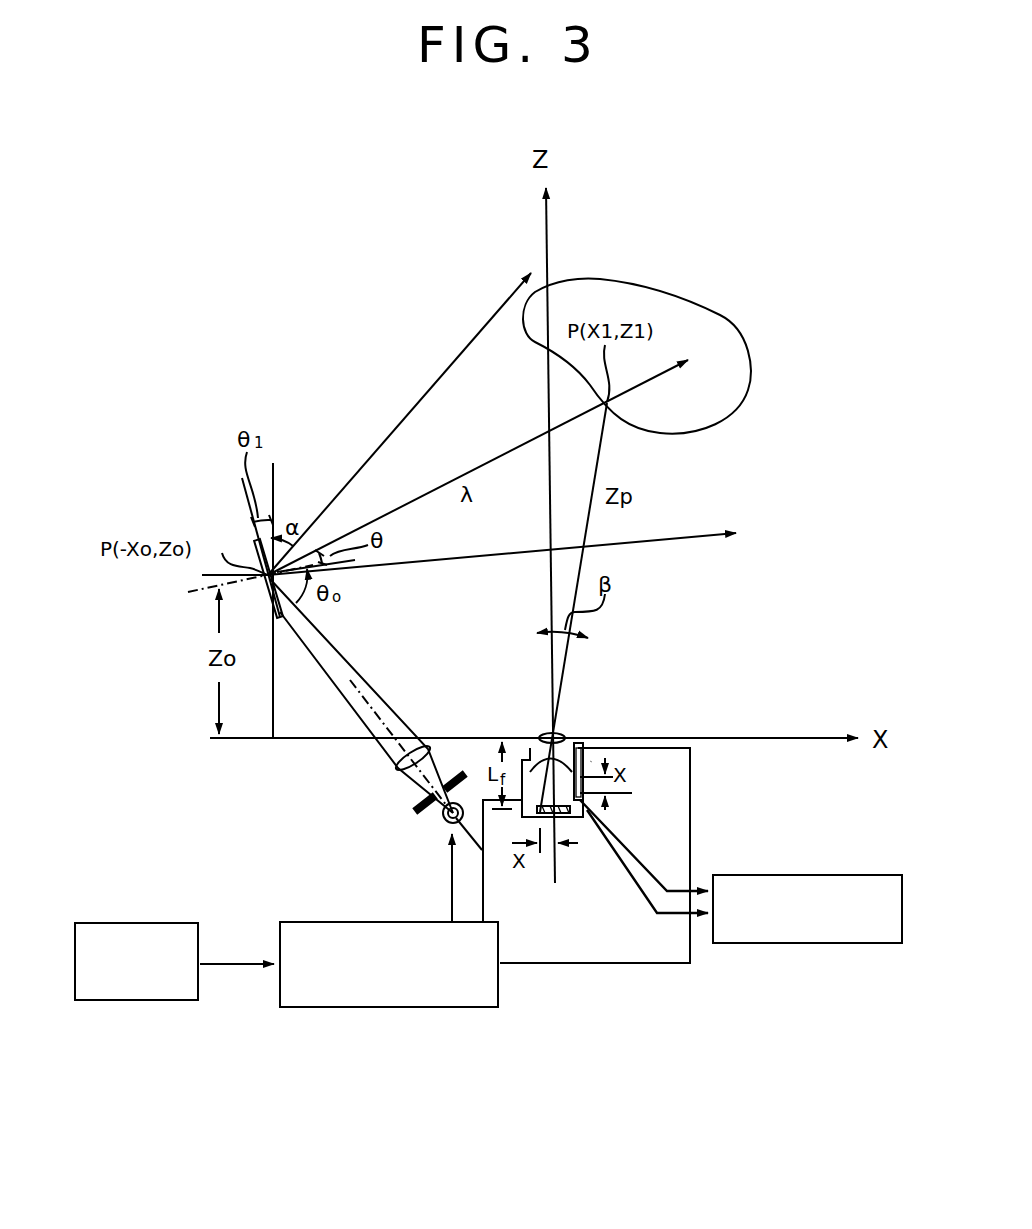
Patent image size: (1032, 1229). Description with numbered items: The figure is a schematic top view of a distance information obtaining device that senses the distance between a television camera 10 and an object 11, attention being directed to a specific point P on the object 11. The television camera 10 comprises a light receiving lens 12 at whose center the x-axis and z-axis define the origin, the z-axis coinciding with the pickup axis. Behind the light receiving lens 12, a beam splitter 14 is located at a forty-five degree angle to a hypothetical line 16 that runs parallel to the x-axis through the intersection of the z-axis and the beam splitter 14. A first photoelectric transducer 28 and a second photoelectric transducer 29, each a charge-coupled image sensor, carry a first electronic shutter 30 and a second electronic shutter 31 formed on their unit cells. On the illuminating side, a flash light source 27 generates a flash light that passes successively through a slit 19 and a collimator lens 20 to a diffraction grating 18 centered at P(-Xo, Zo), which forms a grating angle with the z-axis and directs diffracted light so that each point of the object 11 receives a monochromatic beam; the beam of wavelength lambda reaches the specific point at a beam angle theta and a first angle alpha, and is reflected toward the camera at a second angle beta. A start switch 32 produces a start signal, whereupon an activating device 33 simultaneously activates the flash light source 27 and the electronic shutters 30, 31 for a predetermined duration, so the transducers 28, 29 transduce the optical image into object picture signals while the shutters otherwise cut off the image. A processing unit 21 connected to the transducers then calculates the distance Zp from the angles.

The television camera 10 is at (592, 762).
The object 11 is at (680, 297).
The light receiving lens 12 is at (548, 733).
The beam splitter 14 is at (522, 817).
The hypothetical line 16 is at (632, 793).
The diffraction grating 18 is at (258, 542).
The slit 19 is at (418, 815).
The collimator lens 20 is at (398, 767).
The processing unit 21 is at (820, 875).
The flash light source 27 is at (450, 828).
The first photoelectric transducer 28 is at (562, 814).
The second photoelectric transducer 29 is at (585, 800).
The first electronic shutter 30 is at (548, 763).
The second electronic shutter 31 is at (574, 745).
The start switch 32 is at (133, 921).
The activating device 33 is at (386, 1008).